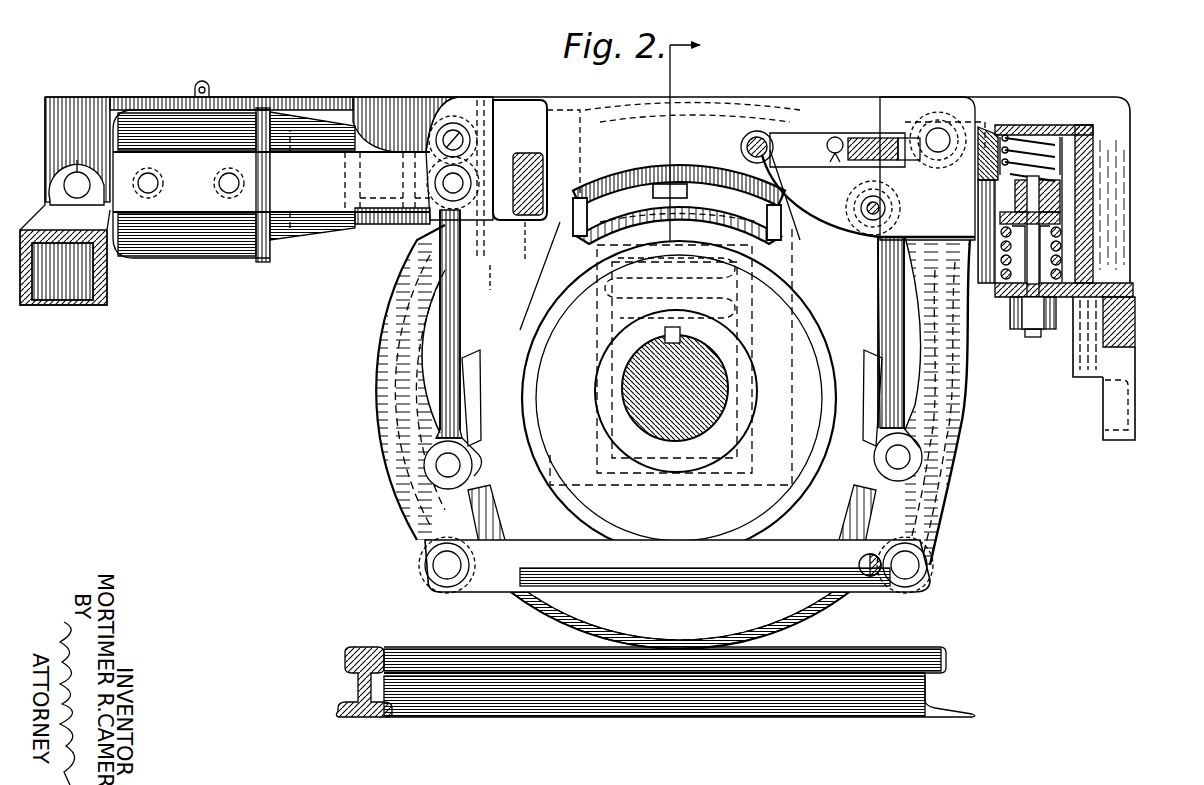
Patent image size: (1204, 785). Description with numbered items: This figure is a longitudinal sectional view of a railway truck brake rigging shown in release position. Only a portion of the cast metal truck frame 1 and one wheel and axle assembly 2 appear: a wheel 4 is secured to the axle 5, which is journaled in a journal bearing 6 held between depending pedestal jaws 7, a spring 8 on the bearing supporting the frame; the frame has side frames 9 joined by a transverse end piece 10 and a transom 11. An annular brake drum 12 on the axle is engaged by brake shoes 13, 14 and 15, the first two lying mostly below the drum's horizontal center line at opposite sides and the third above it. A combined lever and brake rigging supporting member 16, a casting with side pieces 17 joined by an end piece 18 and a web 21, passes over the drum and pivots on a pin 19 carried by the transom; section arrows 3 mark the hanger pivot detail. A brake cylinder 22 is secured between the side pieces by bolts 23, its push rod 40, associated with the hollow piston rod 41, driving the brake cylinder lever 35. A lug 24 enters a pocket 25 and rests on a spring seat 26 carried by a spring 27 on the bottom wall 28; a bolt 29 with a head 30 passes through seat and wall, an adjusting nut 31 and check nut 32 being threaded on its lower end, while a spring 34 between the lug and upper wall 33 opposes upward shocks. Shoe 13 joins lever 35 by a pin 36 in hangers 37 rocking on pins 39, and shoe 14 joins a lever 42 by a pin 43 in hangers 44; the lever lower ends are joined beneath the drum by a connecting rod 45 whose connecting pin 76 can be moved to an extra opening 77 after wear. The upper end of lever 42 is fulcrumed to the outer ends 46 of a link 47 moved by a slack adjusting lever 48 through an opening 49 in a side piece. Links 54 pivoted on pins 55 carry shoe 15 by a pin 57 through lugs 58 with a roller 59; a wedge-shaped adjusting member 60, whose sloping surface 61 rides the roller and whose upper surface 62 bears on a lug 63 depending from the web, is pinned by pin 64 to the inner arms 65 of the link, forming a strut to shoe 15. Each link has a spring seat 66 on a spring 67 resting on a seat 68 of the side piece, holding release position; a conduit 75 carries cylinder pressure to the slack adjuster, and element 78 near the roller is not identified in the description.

The truck frame 1 is at (360, 135).
The wheel and axle assembly 2 is at (520, 313).
The pivot pin 3 is at (372, 226).
The wheel 4 is at (500, 590).
The axle 5 is at (650, 211).
The journal bearing 6 is at (692, 391).
The pedestal jaws 7 is at (605, 440).
The spring 8 is at (600, 305).
The side frames 9 is at (392, 140).
The end piece 10 is at (1130, 405).
The transom 11 is at (30, 297).
The brake drum 12 is at (680, 552).
The brake shoe 13 is at (470, 500).
The brake shoe 14 is at (905, 500).
The brake shoe 15 is at (540, 276).
The combined lever and brake rigging supporting member 16 is at (905, 138).
The side pieces 17 is at (790, 150).
The end piece 18 is at (1040, 125).
The pin 19 is at (78, 175).
The web 21 is at (765, 120).
The brake cylinder 22 is at (238, 140).
The bolts 23 is at (227, 188).
The lug 24 is at (1060, 200).
The pocket 25 is at (1085, 150).
The spring seat 26 is at (1060, 220).
The spring 27 is at (1062, 250).
The bottom wall 28 is at (1070, 330).
The bolt 29 is at (1030, 340).
The head 30 is at (1045, 185).
The adjusting nut 31 is at (1012, 308).
The check nut 32 is at (1020, 333).
The upper wall 33 is at (1090, 125).
The spring 34 is at (1060, 145).
The brake cylinder lever 35 is at (390, 375).
The pin 36 is at (436, 465).
The brake hangers 37 is at (455, 330).
The pin 39 is at (410, 222).
The push rod 40 is at (440, 150).
The brake cylinder piston rod 41 is at (378, 140).
The lever 42 is at (945, 478).
The pin 43 is at (905, 452).
The hangers 44 is at (880, 300).
The connecting rod 45 is at (595, 580).
The outer ends of link 46 is at (1010, 122).
The link 47 is at (968, 120).
The slack adjusting lever 48 is at (985, 130).
The opening 49 is at (860, 138).
The links 54 is at (540, 120).
The pins 55 is at (453, 131).
The pin 57 is at (668, 125).
The lugs 58 is at (677, 191).
The roller 59 is at (850, 204).
The adjusting member 60 is at (923, 110).
The wedge surface 61 is at (760, 140).
The upper surface 62 is at (700, 125).
The lug 63 is at (640, 130).
The pin 64 is at (920, 135).
The inner arms 65 is at (838, 135).
The spring seat 66 is at (520, 160).
The spring 67 is at (540, 243).
The seat 68 is at (487, 279).
The conduit 75 is at (195, 90).
The connecting pin 76 is at (910, 562).
The extra pin receiving opening 77 is at (872, 576).
The cover 78 is at (802, 201).